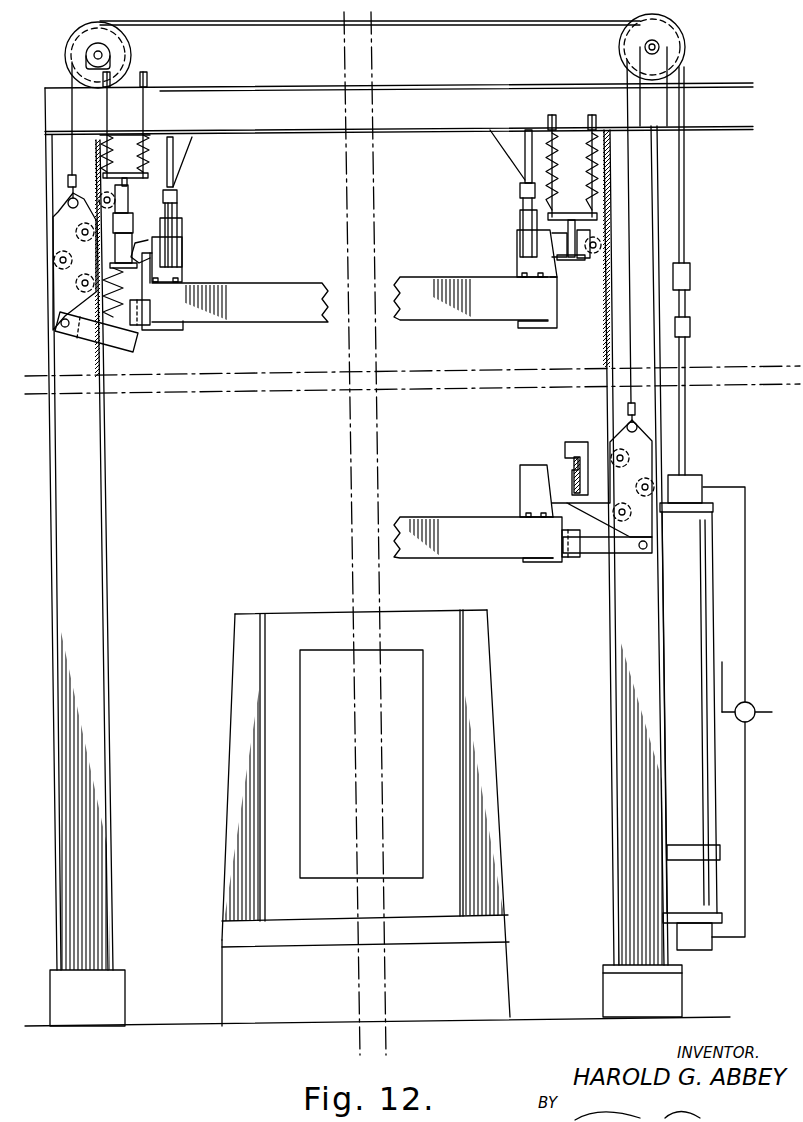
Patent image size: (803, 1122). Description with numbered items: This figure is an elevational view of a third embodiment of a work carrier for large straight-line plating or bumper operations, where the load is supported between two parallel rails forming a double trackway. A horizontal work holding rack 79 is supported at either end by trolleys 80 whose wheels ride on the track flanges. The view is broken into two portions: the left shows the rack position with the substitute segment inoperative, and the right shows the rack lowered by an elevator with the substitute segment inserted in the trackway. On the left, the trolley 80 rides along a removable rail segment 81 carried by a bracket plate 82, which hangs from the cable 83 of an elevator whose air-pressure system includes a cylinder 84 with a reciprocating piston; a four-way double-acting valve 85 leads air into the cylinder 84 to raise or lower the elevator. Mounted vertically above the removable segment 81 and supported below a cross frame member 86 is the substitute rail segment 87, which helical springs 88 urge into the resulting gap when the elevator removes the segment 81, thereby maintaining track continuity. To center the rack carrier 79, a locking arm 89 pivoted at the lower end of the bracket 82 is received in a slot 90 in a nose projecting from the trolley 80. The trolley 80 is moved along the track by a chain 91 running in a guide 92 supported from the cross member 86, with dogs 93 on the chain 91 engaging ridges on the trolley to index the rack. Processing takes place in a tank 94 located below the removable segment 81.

The horizontal work holding rack 79 is at (288, 297).
The trolley 80 is at (182, 272).
The removable rail segment 81 is at (142, 230).
The bracket plate 82 is at (63, 278).
The cable 83 is at (70, 153).
The cylinder 84 is at (702, 808).
The four-way double-acting valve 85 is at (747, 705).
The cross frame member 86 is at (253, 130).
The substitute rail segment 87 is at (128, 192).
The helical springs 88 is at (567, 132).
The locking arm 89 is at (120, 335).
The slot 90 is at (173, 330).
The chain 91 is at (525, 197).
The guide 92 is at (522, 188).
The dogs 93 is at (160, 230).
The tank 94 is at (183, 248).